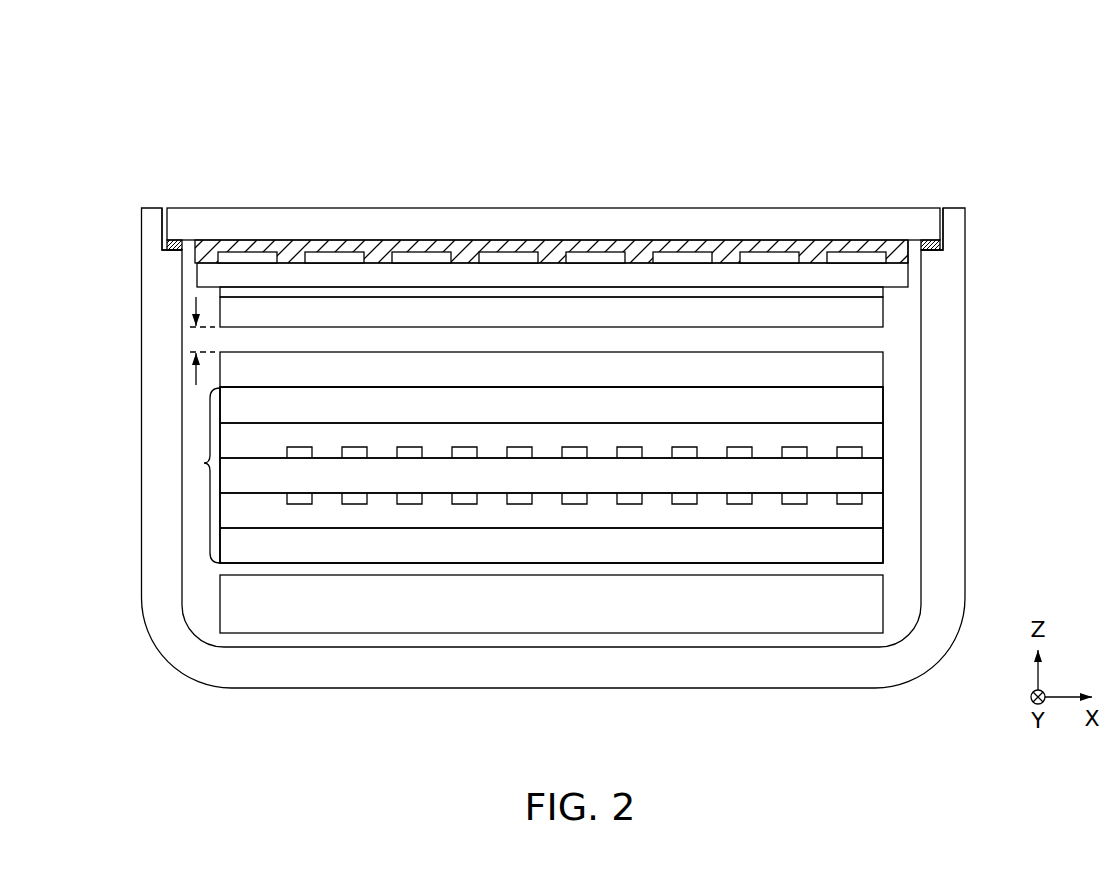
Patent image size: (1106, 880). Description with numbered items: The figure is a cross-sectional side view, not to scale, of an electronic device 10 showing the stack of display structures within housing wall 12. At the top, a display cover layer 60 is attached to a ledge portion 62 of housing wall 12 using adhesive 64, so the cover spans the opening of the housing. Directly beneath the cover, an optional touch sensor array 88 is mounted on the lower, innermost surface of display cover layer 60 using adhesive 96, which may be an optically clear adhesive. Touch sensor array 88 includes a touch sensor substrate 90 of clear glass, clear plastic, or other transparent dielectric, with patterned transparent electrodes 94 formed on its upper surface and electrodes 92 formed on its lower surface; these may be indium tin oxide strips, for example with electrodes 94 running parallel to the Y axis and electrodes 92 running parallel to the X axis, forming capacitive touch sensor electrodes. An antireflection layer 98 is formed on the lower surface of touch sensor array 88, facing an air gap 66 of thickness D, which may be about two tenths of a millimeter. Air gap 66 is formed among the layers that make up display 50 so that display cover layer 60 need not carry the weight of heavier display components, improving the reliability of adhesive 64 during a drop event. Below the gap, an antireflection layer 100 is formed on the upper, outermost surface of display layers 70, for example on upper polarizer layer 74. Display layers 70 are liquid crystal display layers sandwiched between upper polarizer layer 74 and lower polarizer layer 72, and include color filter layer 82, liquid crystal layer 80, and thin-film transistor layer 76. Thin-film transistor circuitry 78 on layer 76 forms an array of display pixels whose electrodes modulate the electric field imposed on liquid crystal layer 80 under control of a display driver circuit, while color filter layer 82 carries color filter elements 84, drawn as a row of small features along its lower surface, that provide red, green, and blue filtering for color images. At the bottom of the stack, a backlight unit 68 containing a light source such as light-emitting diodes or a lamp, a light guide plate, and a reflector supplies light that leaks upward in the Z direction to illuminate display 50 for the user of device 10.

The electronic device 10 is at (286, 74).
The housing wall 12 is at (953, 353).
The display 50 is at (202, 492).
The display cover layer 60 is at (650, 222).
The ledge portion 62 is at (160, 259).
The adhesive 64 is at (177, 242).
The air gap 66 is at (213, 337).
The backlight unit 68 is at (218, 607).
The display layers 70 is at (554, 488).
The lower polarizer layer 72 is at (876, 545).
The upper polarizer layer 74 is at (876, 402).
The thin-film transistor layer 76 is at (876, 510).
The thin-film transistor circuitry 78 is at (796, 506).
The liquid crystal layer 80 is at (876, 473).
The color filter layer 82 is at (876, 437).
The color filter electrodes 84 is at (796, 446).
The touch sensor array 88 is at (912, 251).
The touch sensor substrate 90 is at (892, 279).
The electrodes 92 is at (727, 292).
The electrodes 94 is at (848, 252).
The adhesive 96 is at (557, 242).
The antireflection layer 98 is at (480, 310).
The antireflection layer 100 is at (380, 365).